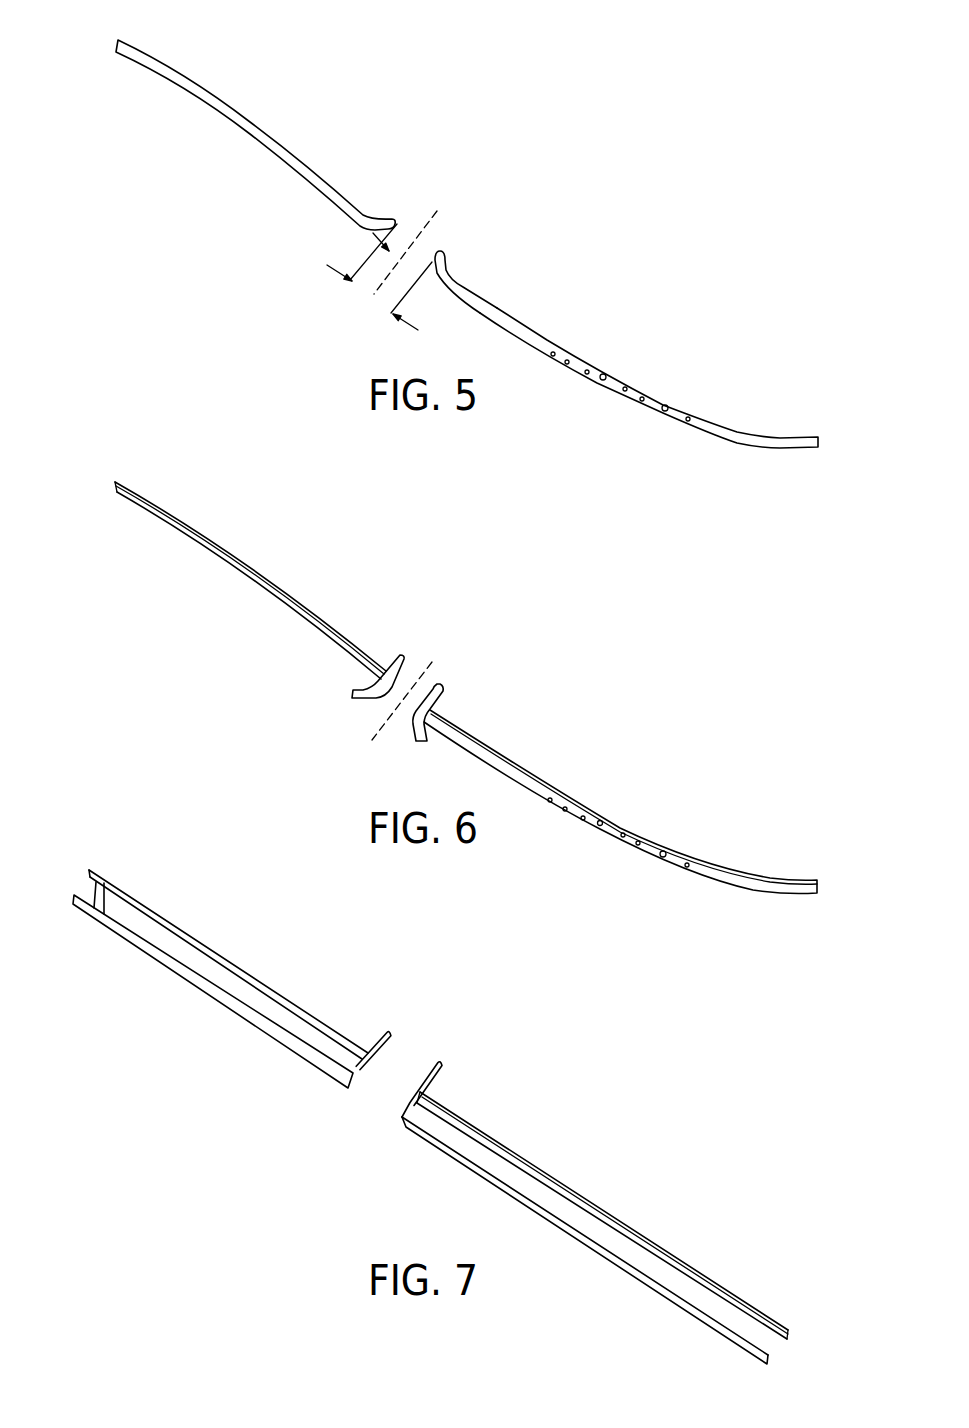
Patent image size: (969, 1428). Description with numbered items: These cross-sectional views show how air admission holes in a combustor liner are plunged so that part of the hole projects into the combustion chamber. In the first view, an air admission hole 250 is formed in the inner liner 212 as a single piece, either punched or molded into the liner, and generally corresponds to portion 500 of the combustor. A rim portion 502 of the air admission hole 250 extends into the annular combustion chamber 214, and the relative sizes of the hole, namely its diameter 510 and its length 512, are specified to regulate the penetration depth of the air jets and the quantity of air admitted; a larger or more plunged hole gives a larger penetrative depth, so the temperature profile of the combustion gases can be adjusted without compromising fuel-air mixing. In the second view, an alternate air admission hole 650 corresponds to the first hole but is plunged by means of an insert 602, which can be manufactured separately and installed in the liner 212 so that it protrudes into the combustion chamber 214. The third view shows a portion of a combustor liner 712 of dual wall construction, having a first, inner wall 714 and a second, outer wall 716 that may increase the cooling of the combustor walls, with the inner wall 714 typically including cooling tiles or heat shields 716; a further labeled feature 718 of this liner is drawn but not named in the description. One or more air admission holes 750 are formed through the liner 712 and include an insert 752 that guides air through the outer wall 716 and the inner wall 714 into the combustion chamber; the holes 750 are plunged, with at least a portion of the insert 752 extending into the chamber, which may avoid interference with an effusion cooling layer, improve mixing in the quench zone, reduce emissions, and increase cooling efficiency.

In FIG. 5, the annular combustion chamber 214 is at (330, 148).
In FIG. 6, the annular combustion chamber 214 is at (327, 587).
In FIG. 5, the inner liner 212 is at (278, 155).
In FIG. 6, the inner liner 212 is at (261, 593).
In FIG. 5, the length 512 is at (409, 222).
In FIG. 5, the air admission hole 250 is at (460, 213).
In FIG. 5, the diameter 510 is at (363, 292).
In FIG. 5, the rim portion 502 is at (445, 256).
In FIG. 5, the portion 500 is at (666, 443).
In FIG. 6, the air admission hole 650 is at (437, 672).
In FIG. 6, the insert 602 is at (445, 688).
In FIG. 7, the air admission holes 750 is at (410, 1054).
In FIG. 7, the insert 752 is at (386, 1030).
In FIG. 7, the inner wall 714 is at (503, 1143).
In FIG. 7, the flange edge 718 is at (591, 1203).
In FIG. 7, the outer wall 716 is at (473, 1166).
In FIG. 7, the combustor liner 712 is at (673, 1327).